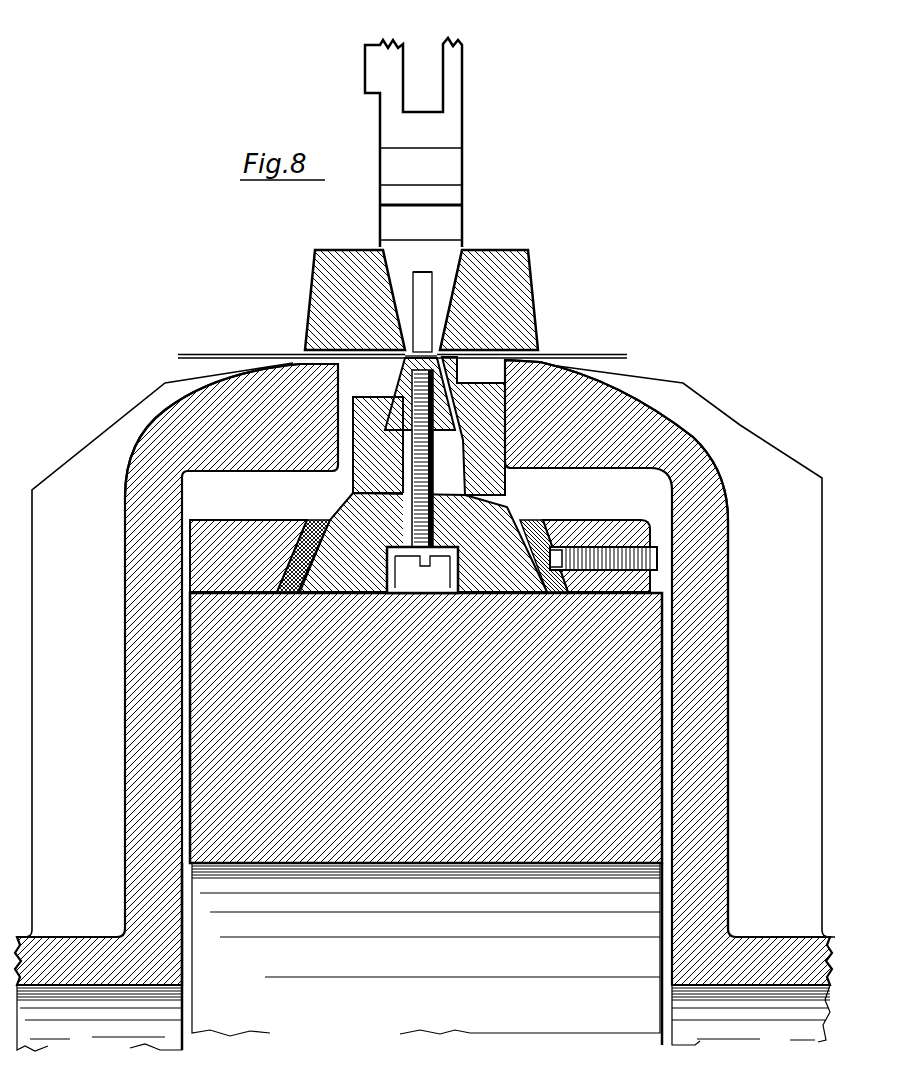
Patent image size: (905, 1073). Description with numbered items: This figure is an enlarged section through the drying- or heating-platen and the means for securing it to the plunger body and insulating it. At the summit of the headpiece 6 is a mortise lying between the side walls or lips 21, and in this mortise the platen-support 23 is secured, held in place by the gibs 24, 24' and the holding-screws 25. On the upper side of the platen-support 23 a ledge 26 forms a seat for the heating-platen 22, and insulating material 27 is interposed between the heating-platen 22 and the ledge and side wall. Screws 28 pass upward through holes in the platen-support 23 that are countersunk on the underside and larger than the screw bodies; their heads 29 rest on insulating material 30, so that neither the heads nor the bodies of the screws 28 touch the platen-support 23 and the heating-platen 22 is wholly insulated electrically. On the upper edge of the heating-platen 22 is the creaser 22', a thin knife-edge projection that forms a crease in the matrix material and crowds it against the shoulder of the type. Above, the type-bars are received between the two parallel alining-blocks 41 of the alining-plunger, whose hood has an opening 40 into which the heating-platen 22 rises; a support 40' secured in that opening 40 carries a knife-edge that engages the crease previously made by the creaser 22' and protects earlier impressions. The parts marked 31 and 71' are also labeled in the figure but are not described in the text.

The headpiece 6 is at (585, 695).
The side walls or lips 21 is at (223, 568).
The heating-platen 22 is at (336, 327).
The creaser 22' is at (328, 320).
The platen-support 23 is at (353, 498).
The gib 24 is at (362, 548).
The gib 24' is at (555, 538).
The holding-screws 25 is at (613, 550).
The ledge 26 is at (370, 406).
The insulating material 27 is at (335, 378).
The screws 28 is at (413, 442).
The heads of the screws 29 is at (480, 530).
The insulating material 30 is at (445, 545).
The side wall 31 is at (722, 628).
The opening 40 is at (402, 338).
The support 40' is at (426, 629).
The alining-blocks 41 is at (320, 267).
The head inner edge 71' is at (510, 301).